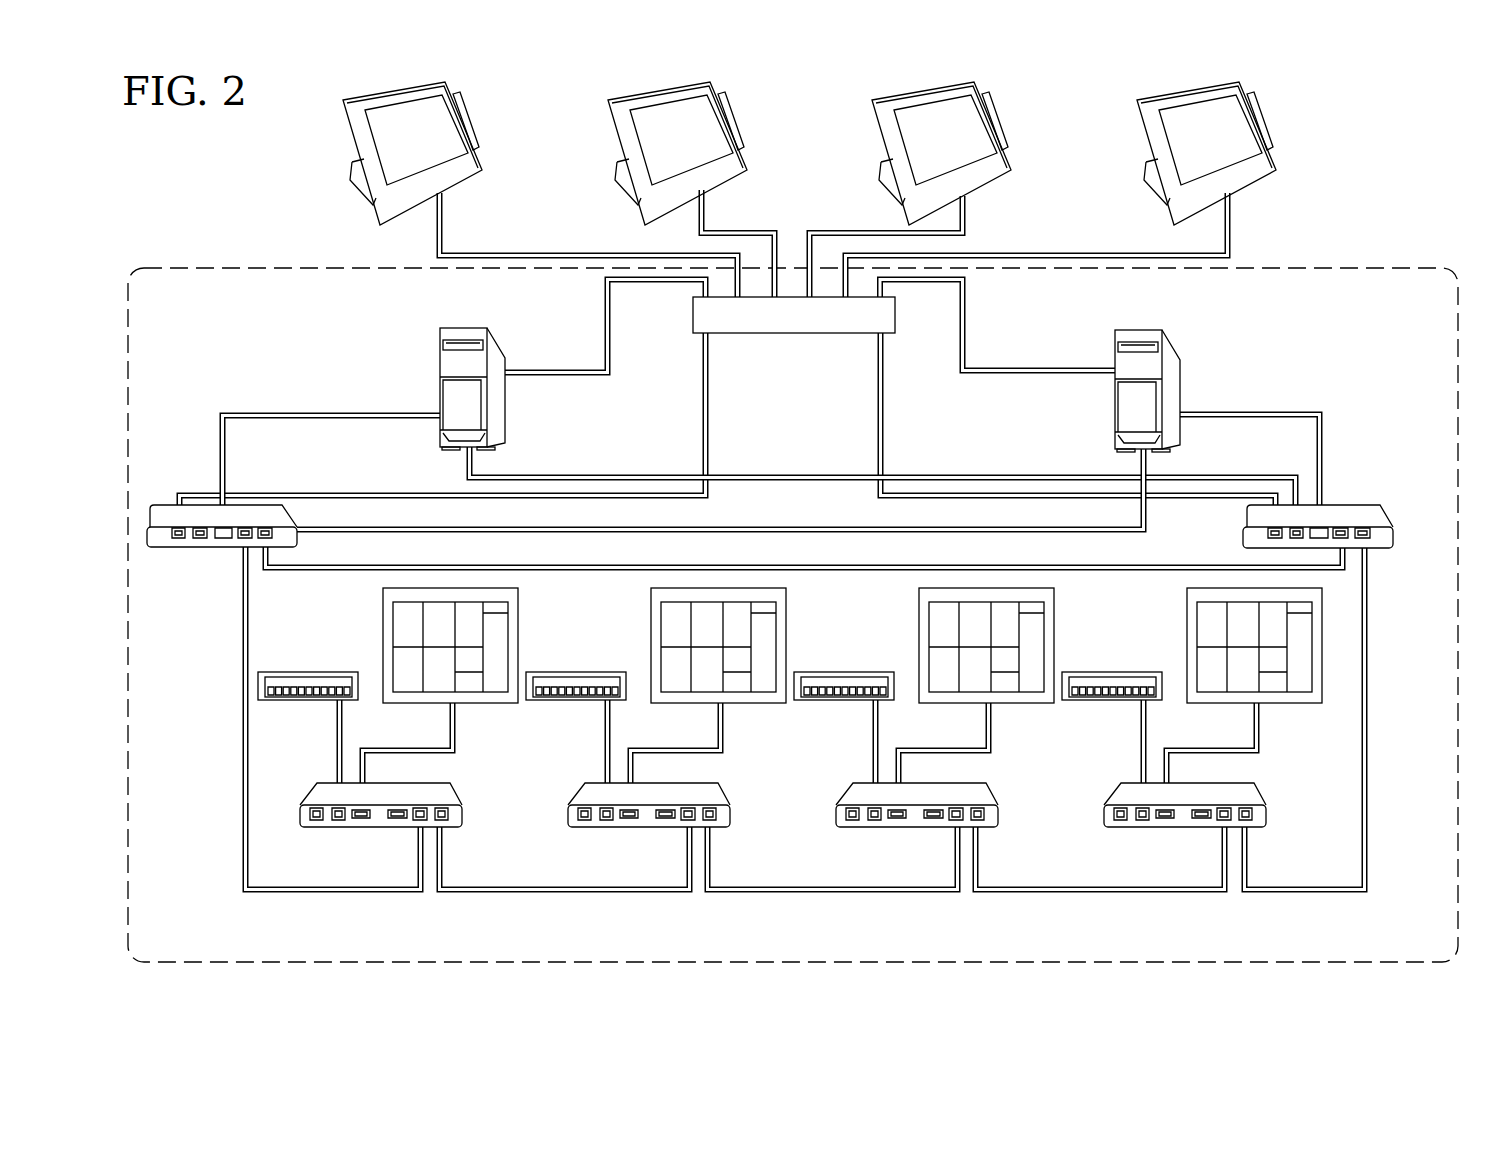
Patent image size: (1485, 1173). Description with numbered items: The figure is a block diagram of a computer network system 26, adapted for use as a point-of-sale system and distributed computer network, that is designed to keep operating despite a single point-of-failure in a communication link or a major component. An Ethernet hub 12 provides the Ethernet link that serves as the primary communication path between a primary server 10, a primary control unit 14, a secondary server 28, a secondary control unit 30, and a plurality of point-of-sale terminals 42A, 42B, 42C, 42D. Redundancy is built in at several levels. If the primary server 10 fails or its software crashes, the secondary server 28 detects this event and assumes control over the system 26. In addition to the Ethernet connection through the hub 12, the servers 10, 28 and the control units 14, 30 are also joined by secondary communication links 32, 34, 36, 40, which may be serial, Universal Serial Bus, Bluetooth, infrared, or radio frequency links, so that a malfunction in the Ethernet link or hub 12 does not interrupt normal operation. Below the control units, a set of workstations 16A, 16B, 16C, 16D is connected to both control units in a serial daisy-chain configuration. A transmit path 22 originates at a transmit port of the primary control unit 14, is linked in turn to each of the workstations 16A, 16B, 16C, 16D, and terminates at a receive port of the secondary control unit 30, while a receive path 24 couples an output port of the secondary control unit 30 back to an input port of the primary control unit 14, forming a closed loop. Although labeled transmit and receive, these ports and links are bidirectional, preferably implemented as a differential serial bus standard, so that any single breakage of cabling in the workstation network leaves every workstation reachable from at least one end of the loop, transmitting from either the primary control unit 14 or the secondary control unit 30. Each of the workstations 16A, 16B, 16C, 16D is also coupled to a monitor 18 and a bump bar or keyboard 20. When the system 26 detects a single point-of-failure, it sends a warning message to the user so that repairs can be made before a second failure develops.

The point-of-sale terminal 42A is at (472, 118).
The point-of-sale terminal 42B is at (737, 118).
The point-of-sale terminal 42C is at (1001, 118).
The point-of-sale terminal 42D is at (1266, 118).
The computer network system 26 is at (1298, 268).
The secondary server 28 is at (497, 345).
The primary server 10 is at (1172, 347).
The Ethernet hub 12 is at (787, 333).
The communication link 34 is at (285, 413).
The communication link 32 is at (1230, 411).
The communication link 36 is at (1183, 475).
The secondary control unit 30 is at (158, 508).
The primary control unit 14 is at (1345, 510).
The communication link 40 is at (740, 525).
The receive path 24 is at (845, 572).
The monitor 18 is at (518, 627).
The bump bar or keyboard 20 is at (278, 671).
The workstation 16D is at (452, 788).
The workstation 16C is at (720, 788).
The workstation 16B is at (988, 788).
The workstation 16A is at (1256, 788).
The transmit path 22 is at (243, 662).